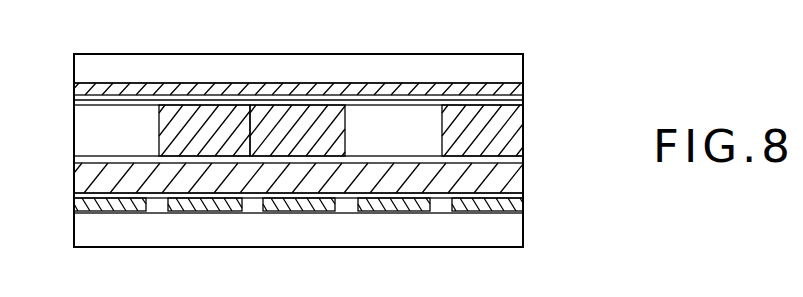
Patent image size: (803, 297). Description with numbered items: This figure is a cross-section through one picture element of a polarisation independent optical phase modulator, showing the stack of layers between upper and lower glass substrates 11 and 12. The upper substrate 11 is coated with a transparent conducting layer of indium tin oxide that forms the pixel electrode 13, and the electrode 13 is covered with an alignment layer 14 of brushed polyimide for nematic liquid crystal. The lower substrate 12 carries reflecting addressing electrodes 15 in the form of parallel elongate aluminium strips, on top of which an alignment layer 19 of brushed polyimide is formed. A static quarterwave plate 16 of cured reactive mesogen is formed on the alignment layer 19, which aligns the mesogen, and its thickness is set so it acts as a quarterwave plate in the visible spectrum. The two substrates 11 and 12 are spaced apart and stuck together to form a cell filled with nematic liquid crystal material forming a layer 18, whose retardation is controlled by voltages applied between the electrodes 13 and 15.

The upper glass substrate 11 is at (505, 72).
The electrode 13 is at (508, 90).
The alignment layer 14 is at (493, 107).
The nematic liquid crystal layer 18 is at (498, 139).
The static quarterwave plate 16 is at (498, 175).
The reflecting addressing electrodes 15 is at (505, 203).
The alignment layer 19 is at (445, 207).
The lower glass substrate 12 is at (498, 237).